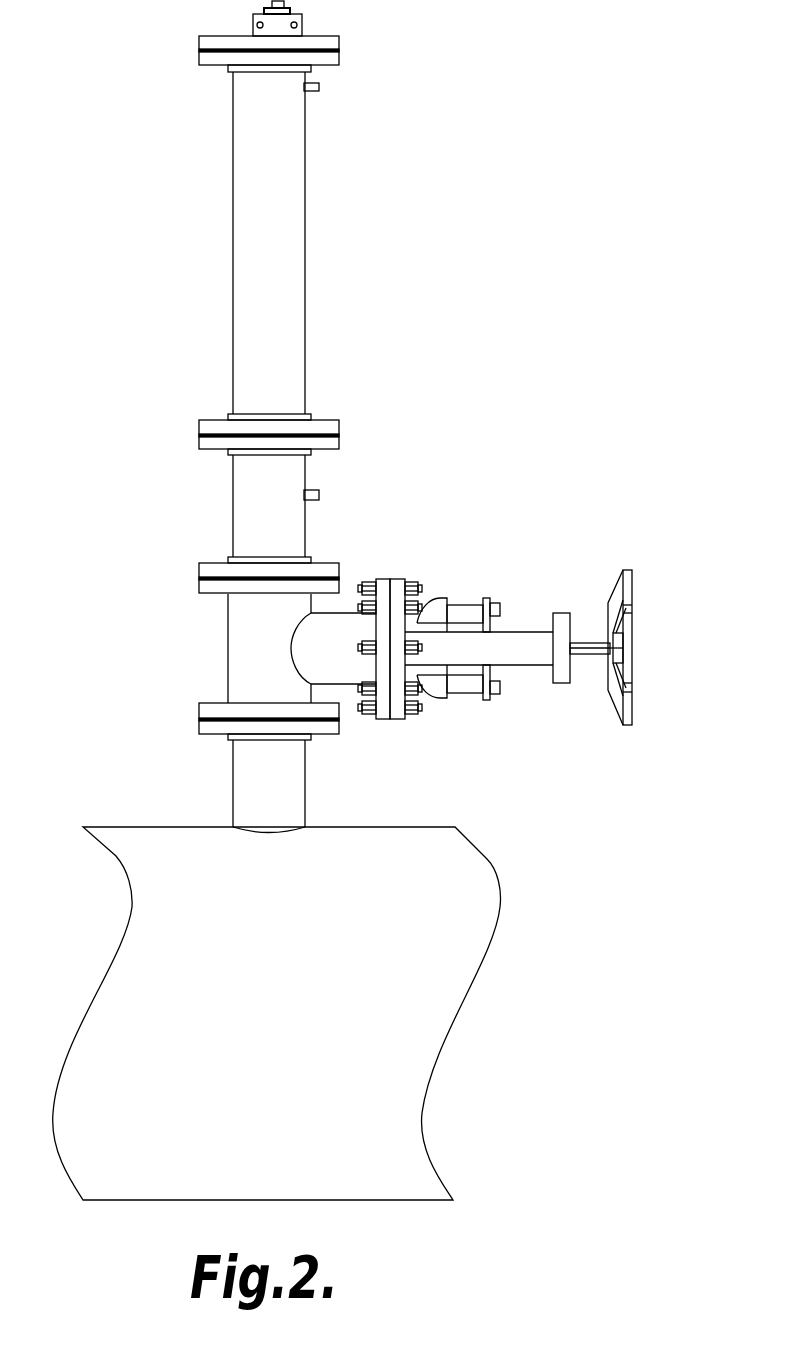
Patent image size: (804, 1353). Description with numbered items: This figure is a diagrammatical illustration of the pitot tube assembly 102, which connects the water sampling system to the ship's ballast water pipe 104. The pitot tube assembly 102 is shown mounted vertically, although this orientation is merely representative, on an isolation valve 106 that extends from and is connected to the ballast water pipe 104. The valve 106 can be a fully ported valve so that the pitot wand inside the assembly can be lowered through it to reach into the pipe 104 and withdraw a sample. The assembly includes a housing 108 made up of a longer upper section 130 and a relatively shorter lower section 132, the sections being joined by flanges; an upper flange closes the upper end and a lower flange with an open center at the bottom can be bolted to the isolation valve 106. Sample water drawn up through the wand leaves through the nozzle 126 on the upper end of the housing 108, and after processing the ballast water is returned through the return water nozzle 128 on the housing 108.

The pitot tube assembly 102 is at (495, 355).
The ballast water pipe 104 is at (417, 827).
The isolation valve 106 is at (235, 651).
The housing 108 is at (242, 194).
The nozzle 126 is at (320, 86).
The return water nozzle 128 is at (320, 495).
The upper section 130 is at (300, 238).
The lower section 132 is at (235, 490).